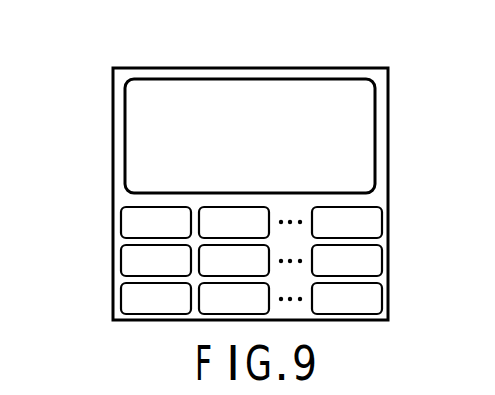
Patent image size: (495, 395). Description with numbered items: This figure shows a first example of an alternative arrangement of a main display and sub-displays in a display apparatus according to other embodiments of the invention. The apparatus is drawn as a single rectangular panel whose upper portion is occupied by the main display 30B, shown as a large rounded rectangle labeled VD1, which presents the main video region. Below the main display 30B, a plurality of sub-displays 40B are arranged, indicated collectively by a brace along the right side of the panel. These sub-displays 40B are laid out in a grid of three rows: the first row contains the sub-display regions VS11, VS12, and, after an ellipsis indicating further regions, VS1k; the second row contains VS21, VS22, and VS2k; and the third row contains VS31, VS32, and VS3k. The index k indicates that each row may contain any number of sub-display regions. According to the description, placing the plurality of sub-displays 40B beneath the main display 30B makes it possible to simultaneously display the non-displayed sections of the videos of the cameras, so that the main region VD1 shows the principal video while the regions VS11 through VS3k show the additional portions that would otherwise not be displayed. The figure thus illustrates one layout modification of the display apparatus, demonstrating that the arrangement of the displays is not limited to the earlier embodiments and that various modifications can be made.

The main display 30B is at (250, 171).
The sub-displays 40B is at (290, 260).
The main display region VD1 is at (250, 136).
The sub-display region (row 1, col 1) VS11 is at (156, 222).
The sub-display region (row 1, col 2) VS12 is at (234, 222).
The sub-display region (row 1, col k) VS1k is at (347, 222).
The sub-display region (row 2, col 1) VS21 is at (156, 260).
The sub-display region (row 2, col 2) VS22 is at (234, 260).
The sub-display region (row 2, col k) VS2k is at (347, 260).
The sub-display region (row 3, col 1) VS31 is at (156, 298).
The sub-display region (row 3, col 2) VS32 is at (234, 298).
The sub-display region (row 3, col k) VS3k is at (347, 298).